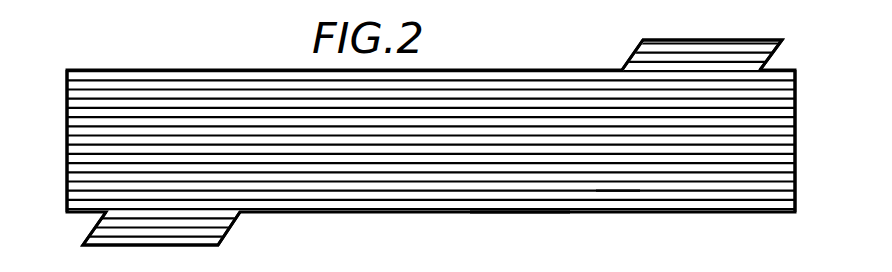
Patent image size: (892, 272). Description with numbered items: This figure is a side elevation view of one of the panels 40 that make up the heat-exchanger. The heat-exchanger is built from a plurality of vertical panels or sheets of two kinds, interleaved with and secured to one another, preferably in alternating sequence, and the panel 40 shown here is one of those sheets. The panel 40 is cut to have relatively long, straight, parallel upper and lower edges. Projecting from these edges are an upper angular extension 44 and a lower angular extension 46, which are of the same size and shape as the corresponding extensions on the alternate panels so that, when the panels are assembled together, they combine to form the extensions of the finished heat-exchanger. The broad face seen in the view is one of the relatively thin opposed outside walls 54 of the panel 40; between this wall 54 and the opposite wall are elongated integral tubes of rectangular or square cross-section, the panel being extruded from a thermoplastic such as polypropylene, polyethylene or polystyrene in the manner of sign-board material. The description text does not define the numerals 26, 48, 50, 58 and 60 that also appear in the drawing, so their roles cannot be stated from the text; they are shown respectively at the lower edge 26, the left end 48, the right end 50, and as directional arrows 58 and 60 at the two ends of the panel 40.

The base plate 26 is at (375, 215).
The panel 40 is at (517, 222).
The upper angular extension 44 is at (632, 53).
The lower angular extension 46 is at (234, 218).
The left end face 48 is at (64, 204).
The right end face 50 is at (794, 197).
The outside wall 54 is at (619, 190).
The light input direction 58 is at (58, 103).
The light output direction 60 is at (845, 105).